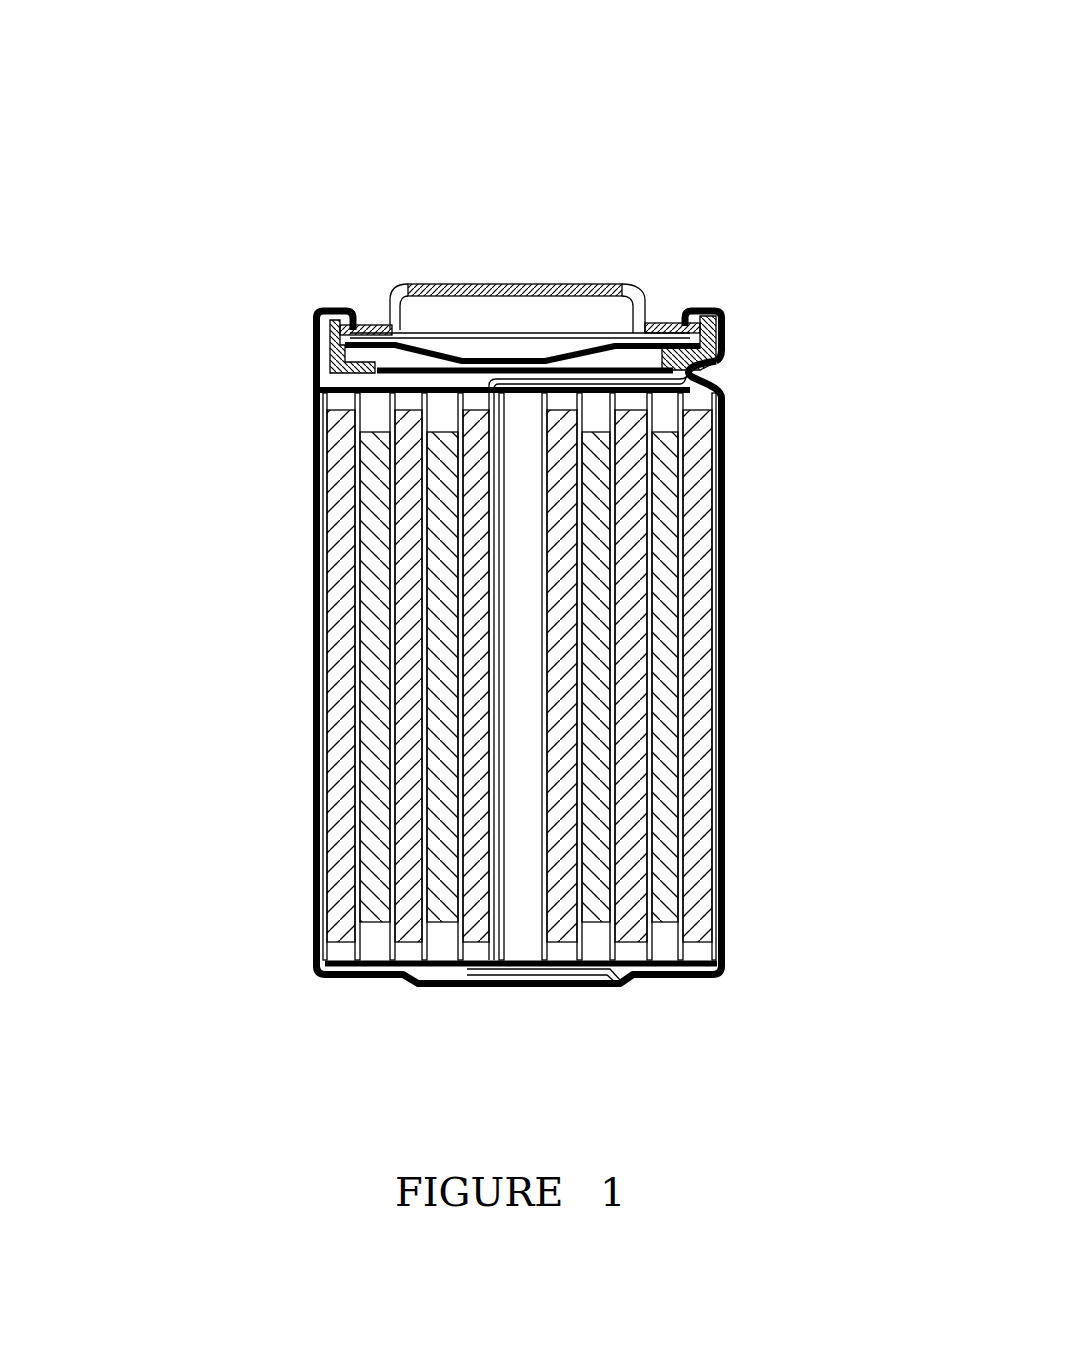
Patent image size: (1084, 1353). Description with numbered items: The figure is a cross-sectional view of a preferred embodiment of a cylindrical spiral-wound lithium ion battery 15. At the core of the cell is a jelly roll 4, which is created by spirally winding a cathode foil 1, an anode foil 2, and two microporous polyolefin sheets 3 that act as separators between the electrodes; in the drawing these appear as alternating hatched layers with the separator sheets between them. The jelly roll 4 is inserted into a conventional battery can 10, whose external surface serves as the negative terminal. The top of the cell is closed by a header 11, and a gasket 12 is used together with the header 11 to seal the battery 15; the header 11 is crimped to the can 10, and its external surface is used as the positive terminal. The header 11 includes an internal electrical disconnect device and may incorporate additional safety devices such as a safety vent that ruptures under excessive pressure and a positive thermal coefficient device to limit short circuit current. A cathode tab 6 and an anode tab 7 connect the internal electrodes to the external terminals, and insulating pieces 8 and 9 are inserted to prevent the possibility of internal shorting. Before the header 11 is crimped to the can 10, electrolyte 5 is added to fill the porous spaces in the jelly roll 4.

The cathode foil 1 is at (665, 772).
The anode foil 2 is at (340, 772).
The microporous polyolefin sheets 3 is at (352, 683).
The jelly roll 4 is at (318, 388).
The electrolyte 5 is at (630, 683).
The cathode tab 6 is at (470, 362).
The anode tab 7 is at (412, 962).
The insulating piece 8 is at (363, 367).
The insulating piece 9 is at (714, 957).
The battery can 10 is at (735, 520).
The header 11 is at (479, 278).
The gasket 12 is at (733, 316).
The battery 15 is at (692, 162).